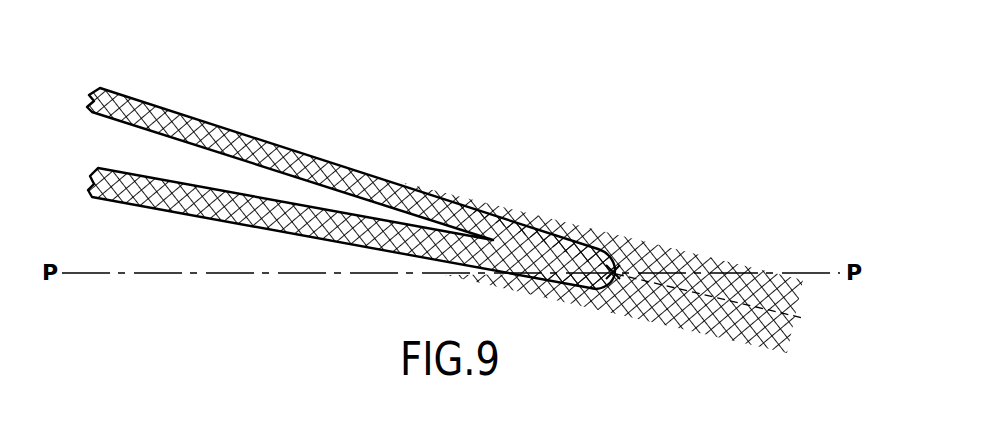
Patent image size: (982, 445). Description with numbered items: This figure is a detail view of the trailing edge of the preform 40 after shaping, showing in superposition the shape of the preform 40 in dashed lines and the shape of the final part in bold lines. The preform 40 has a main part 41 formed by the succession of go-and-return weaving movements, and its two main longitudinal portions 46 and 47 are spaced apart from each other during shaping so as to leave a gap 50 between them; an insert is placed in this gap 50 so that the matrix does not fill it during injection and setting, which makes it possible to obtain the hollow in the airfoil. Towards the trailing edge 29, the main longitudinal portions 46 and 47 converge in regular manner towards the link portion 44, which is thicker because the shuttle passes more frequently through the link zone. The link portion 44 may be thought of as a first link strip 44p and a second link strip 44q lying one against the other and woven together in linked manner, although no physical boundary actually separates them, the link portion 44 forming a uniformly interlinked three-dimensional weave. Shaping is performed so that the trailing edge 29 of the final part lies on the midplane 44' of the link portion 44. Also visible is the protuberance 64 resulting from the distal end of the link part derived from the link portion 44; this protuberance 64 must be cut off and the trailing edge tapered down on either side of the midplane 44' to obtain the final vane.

The trailing edge 29 is at (617, 266).
The preform 40 is at (623, 262).
The main part 41 is at (157, 97).
The link portion 44 is at (623, 282).
The midplane of the link portion 44' is at (817, 316).
The first link strip 44p is at (657, 307).
The second link strip 44q is at (700, 260).
The main longitudinal portion 46 is at (225, 210).
The main longitudinal portion 47 is at (330, 167).
The gap 50 is at (363, 166).
The protuberance 64 is at (679, 342).